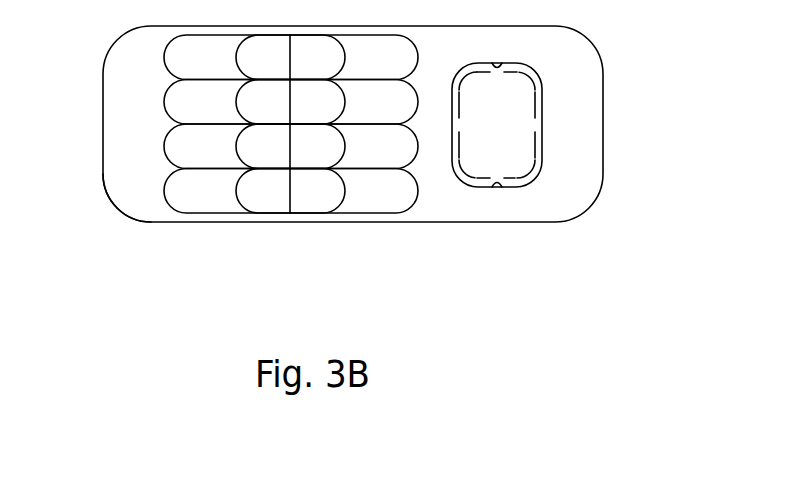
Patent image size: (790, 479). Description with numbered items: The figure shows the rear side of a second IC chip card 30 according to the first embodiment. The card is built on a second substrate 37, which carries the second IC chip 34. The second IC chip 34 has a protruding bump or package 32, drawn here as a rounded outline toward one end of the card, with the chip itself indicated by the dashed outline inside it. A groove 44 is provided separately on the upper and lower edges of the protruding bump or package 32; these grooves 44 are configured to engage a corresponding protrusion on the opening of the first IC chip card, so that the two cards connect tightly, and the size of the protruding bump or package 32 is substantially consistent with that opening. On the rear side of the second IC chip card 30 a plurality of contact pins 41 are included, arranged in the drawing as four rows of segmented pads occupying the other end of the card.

The second IC chip card 30 is at (595, 50).
The protruding bump or package 32 is at (543, 111).
The second IC chip 34 is at (535, 140).
The second substrate 37 is at (121, 211).
The contact pins 41 is at (291, 125).
The groove 44 is at (497, 187).